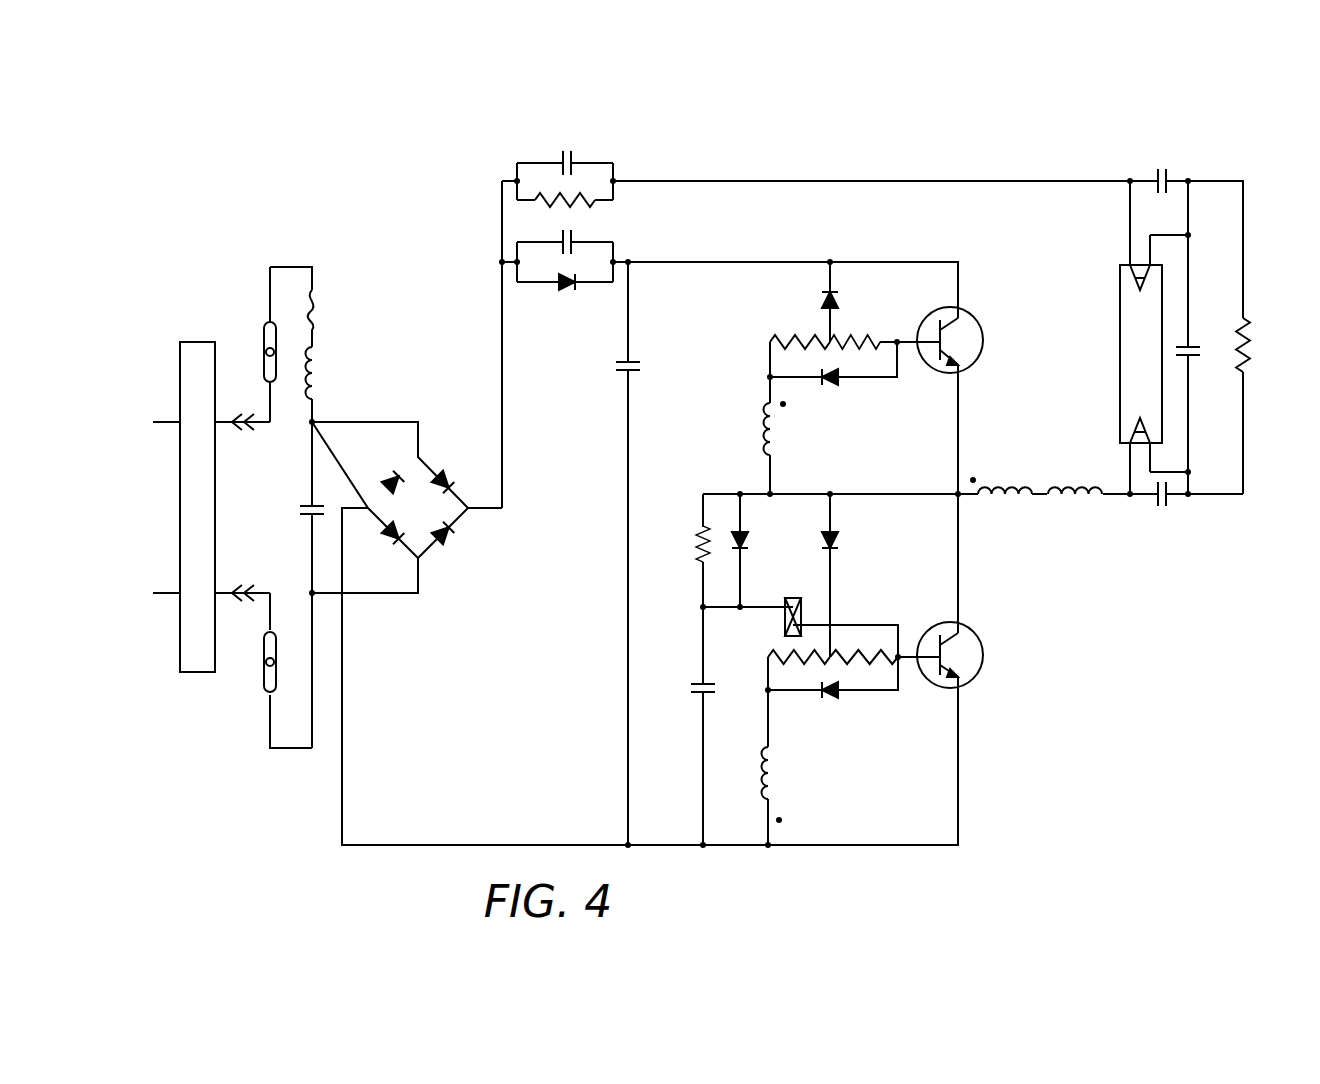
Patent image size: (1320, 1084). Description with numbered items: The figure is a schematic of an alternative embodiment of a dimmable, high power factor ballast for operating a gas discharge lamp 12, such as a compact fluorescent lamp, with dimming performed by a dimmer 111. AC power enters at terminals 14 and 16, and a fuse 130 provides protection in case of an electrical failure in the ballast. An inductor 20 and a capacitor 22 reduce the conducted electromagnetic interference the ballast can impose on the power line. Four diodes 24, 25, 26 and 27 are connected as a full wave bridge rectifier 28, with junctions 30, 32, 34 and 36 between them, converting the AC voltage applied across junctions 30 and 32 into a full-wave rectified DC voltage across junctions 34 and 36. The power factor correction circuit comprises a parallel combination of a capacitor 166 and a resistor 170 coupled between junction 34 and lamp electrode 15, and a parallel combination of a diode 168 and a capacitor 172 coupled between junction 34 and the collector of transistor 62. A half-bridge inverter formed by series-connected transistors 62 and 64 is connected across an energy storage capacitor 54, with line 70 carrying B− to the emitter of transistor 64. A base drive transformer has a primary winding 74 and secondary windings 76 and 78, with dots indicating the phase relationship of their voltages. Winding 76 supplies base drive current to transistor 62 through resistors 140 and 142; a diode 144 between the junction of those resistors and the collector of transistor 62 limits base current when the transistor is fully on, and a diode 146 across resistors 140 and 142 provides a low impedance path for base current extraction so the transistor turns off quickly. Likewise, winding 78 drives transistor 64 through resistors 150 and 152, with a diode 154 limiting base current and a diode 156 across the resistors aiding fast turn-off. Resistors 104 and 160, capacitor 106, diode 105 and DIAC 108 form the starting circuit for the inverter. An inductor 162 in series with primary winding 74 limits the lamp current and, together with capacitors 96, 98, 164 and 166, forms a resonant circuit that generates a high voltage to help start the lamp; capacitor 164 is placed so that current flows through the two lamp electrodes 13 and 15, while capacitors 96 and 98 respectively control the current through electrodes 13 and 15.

The dimmer 111 is at (180, 655).
The terminal 14 is at (264, 352).
The terminal 16 is at (264, 668).
The fuse 130 is at (316, 292).
The inductor 20 is at (322, 380).
The capacitor 22 is at (305, 505).
The full wave bridge rectifier 28 is at (407, 507).
The diode 24 is at (394, 545).
The diode 25 is at (447, 545).
The diode 26 is at (440, 472).
The diode 27 is at (382, 488).
The junction 30 is at (416, 596).
The junction 32 is at (416, 456).
The junction 34 is at (486, 510).
The junction 36 is at (342, 528).
The capacitor 166 is at (556, 158).
The resistor 170 is at (585, 202).
The capacitor 172 is at (580, 240).
The diode 168 is at (555, 287).
The energy storage capacitor 54 is at (634, 372).
The diode 144 is at (822, 292).
The resistor 140 is at (772, 338).
The resistor 142 is at (862, 338).
The diode 146 is at (835, 385).
The winding 76 is at (785, 435).
The transistor 62 is at (960, 315).
The resistor 104 is at (698, 560).
The capacitor 106 is at (695, 682).
The diode 105 is at (752, 545).
The diode 154 is at (842, 547).
The DIAC 108 is at (800, 598).
The resistor 150 is at (778, 662).
The resistor 152 is at (875, 665).
The diode 156 is at (830, 700).
The winding 78 is at (765, 770).
The transistor 64 is at (978, 675).
The line 70 is at (743, 848).
The primary winding 74 is at (1002, 500).
The inductor 162 is at (1068, 500).
The gas discharge lamp 12 is at (1120, 335).
The lamp electrode 15 is at (1128, 288).
The lamp electrode 13 is at (1128, 428).
The capacitor 98 is at (1168, 170).
The capacitor 96 is at (1168, 505).
The capacitor 164 is at (1193, 340).
The resistor 160 is at (1246, 318).